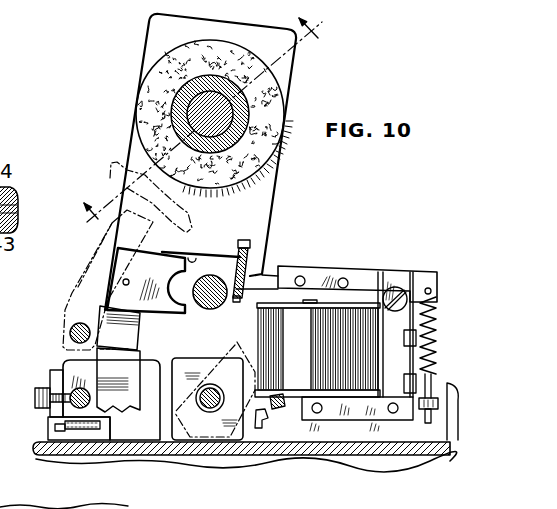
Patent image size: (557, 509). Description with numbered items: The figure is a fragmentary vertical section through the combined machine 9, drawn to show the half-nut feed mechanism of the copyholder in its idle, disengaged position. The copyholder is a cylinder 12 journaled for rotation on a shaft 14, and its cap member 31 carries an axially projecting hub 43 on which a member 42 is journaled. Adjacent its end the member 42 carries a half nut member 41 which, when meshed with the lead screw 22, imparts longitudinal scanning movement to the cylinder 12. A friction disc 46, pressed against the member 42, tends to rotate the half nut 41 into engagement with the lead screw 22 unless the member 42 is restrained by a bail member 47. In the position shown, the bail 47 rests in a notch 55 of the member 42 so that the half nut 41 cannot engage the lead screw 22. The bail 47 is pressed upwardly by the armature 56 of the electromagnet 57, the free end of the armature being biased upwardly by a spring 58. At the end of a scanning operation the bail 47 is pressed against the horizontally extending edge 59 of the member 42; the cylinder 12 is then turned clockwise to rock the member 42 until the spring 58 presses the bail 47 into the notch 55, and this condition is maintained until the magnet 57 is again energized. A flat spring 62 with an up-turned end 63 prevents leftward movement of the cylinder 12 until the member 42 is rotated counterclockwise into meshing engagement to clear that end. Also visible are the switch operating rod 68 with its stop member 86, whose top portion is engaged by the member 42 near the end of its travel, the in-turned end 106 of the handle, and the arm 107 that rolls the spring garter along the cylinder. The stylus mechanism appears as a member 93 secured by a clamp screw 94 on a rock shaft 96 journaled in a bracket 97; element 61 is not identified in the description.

The combined machine 9 is at (207, 127).
The cylinder 12 is at (112, 178).
The shaft 14 is at (203, 100).
The lead screw 22 is at (221, 303).
The cap member 31 is at (13, 507).
The half nut member 41 is at (181, 309).
The member 42 is at (269, 197).
The hub 43 is at (240, 63).
The friction disc 46 is at (158, 62).
The bail member 47 is at (233, 268).
The notch 55 is at (245, 240).
The armature 56 is at (333, 273).
The electromagnet 57 is at (308, 356).
The spring 58 is at (436, 347).
The horizontally extending edge 59 is at (193, 257).
The element 61 is at (7, 153).
The flat spring 62 is at (7, 133).
The up-turned end 63 is at (125, 368).
The switch operating rod 68 is at (72, 392).
The stop member 86 is at (163, 358).
The member 93 is at (237, 342).
The clamp screw 94 is at (107, 400).
The rock shaft 96 is at (211, 388).
The bracket 97 is at (181, 437).
The in-turned end 106 is at (70, 333).
The arm 107 is at (86, 268).